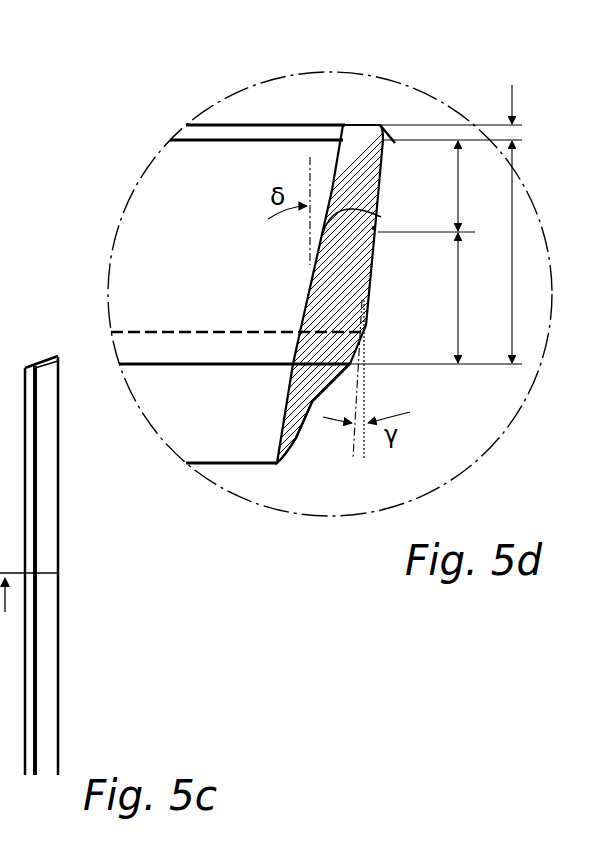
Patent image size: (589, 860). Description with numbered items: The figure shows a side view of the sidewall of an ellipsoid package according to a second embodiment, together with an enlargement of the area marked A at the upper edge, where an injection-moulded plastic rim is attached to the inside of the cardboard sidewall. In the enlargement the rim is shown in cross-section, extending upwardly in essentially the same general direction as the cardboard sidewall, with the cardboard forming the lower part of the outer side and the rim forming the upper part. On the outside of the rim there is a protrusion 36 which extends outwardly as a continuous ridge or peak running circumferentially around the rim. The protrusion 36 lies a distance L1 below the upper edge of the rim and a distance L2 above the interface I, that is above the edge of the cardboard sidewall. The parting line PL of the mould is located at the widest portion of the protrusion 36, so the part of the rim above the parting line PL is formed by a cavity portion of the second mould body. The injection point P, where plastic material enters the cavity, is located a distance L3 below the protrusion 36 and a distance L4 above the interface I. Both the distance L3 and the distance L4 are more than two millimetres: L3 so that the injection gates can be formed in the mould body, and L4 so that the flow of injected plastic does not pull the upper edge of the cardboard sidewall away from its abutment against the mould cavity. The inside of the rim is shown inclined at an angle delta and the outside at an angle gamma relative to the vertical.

The protrusion 36 is at (395, 143).
The detail region A is at (330, 267).
The parting line PL is at (170, 140).
The injection point P is at (376, 228).
The interface I is at (314, 398).
The distance L1 is at (532, 104).
The distance L2 is at (530, 252).
The distance L3 is at (476, 186).
The distance L4 is at (476, 298).